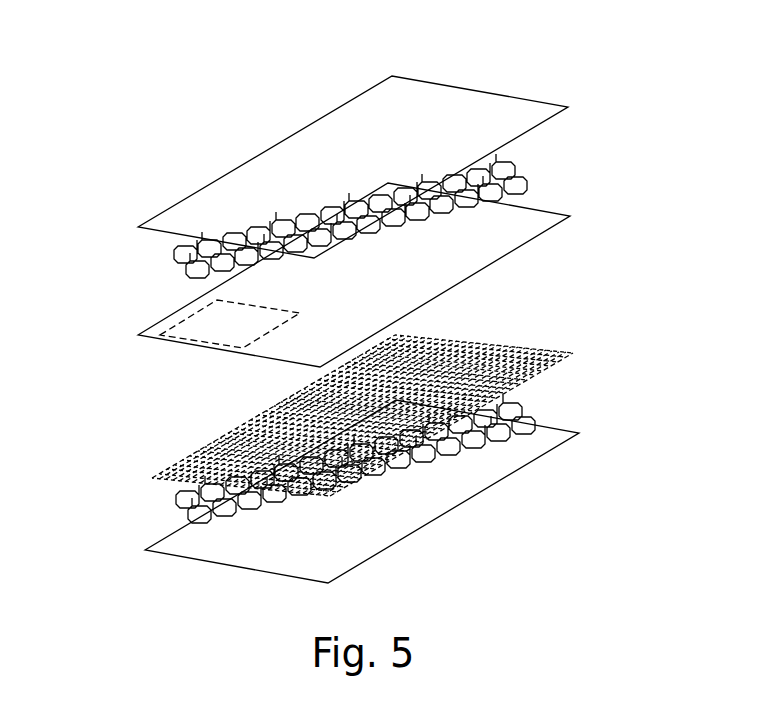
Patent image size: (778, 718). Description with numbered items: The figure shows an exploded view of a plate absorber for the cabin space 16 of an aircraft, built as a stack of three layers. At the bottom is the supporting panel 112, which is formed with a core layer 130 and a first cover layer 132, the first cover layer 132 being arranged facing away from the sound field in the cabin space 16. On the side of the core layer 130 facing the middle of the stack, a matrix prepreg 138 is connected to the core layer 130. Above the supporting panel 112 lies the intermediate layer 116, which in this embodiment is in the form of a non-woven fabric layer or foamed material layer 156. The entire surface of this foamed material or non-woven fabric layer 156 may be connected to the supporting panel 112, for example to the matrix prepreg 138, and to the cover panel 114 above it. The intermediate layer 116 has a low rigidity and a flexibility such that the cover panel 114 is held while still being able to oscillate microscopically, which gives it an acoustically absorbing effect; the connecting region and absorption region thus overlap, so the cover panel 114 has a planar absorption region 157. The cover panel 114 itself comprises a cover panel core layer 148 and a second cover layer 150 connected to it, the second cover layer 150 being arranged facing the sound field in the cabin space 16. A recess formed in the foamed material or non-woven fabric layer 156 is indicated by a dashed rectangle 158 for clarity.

The cabin space 16 is at (120, 64).
The supporting panel 112 is at (80, 385).
The cover panel 114 is at (80, 122).
The intermediate layer 116 is at (80, 294).
The core layer 130 is at (533, 398).
The first cover layer 132 is at (480, 497).
The matrix prepreg 138 is at (203, 443).
The cover panel core layer 148 is at (517, 170).
The second cover layer 150 is at (504, 95).
The non-woven fabric layer or foamed material layer 156 is at (518, 252).
The planar absorption region 157 is at (273, 181).
The dashed rectangle 158 is at (195, 338).